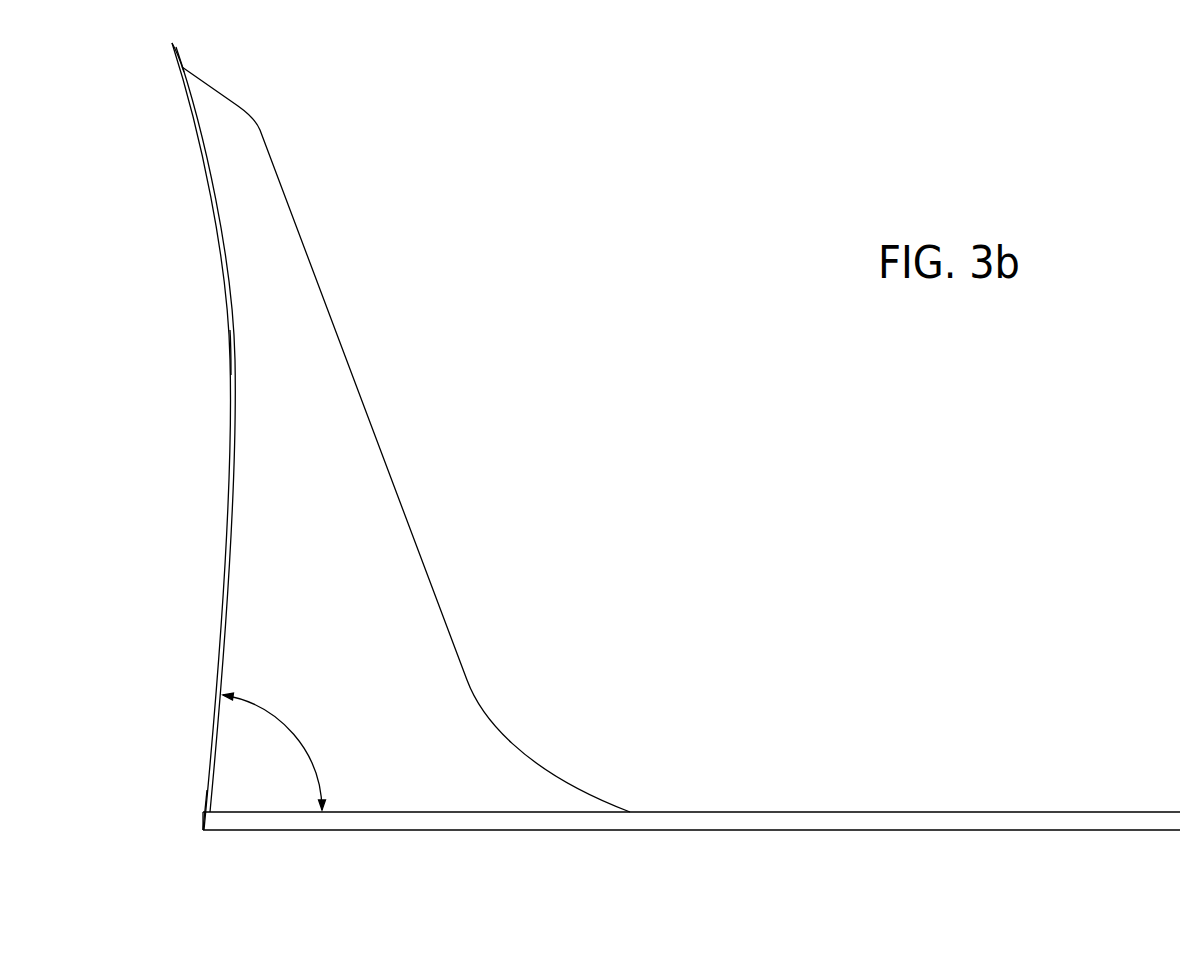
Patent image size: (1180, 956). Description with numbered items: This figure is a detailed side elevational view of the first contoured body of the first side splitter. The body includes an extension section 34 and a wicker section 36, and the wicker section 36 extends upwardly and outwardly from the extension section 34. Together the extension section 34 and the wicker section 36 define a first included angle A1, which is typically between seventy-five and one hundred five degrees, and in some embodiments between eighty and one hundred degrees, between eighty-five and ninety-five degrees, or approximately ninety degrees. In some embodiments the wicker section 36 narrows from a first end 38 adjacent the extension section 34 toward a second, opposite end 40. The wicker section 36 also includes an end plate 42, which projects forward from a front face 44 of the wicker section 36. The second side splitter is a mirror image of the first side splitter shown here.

The extension section 34 is at (757, 812).
The wicker section 36 is at (227, 485).
The first end 38 is at (202, 815).
The second end 40 is at (172, 45).
The end plate 42 is at (340, 373).
The front face 44 is at (236, 345).
The first included angle A1 is at (300, 738).